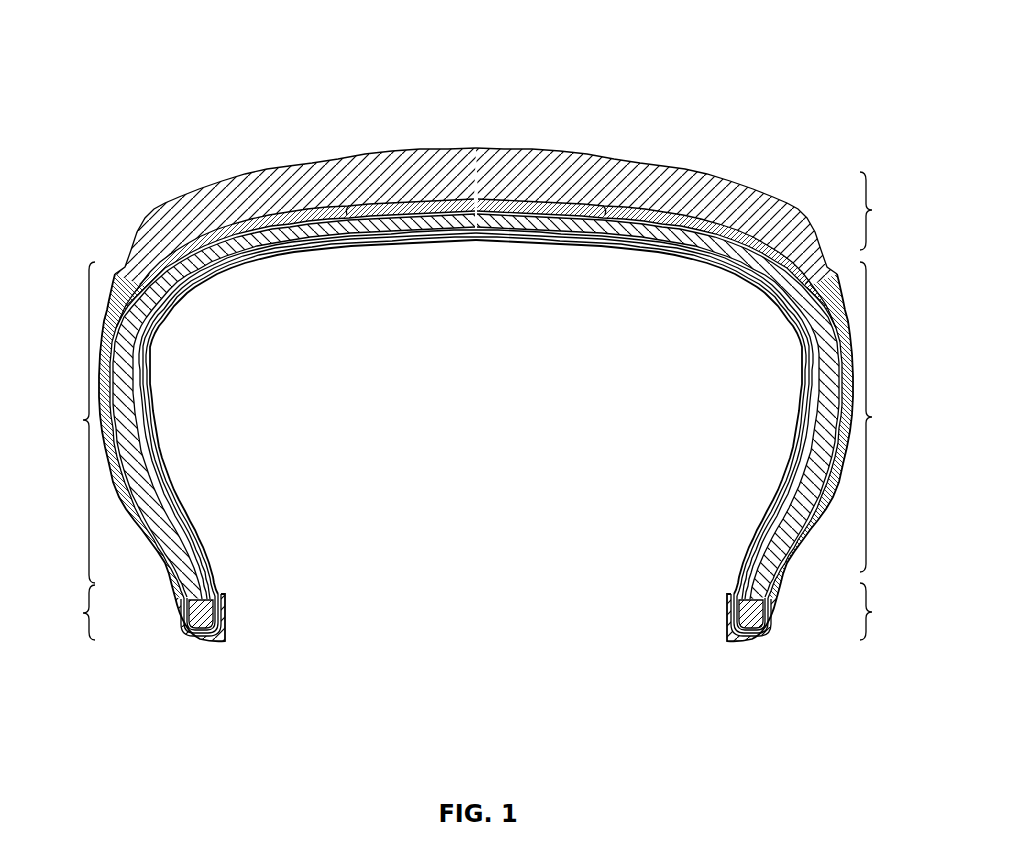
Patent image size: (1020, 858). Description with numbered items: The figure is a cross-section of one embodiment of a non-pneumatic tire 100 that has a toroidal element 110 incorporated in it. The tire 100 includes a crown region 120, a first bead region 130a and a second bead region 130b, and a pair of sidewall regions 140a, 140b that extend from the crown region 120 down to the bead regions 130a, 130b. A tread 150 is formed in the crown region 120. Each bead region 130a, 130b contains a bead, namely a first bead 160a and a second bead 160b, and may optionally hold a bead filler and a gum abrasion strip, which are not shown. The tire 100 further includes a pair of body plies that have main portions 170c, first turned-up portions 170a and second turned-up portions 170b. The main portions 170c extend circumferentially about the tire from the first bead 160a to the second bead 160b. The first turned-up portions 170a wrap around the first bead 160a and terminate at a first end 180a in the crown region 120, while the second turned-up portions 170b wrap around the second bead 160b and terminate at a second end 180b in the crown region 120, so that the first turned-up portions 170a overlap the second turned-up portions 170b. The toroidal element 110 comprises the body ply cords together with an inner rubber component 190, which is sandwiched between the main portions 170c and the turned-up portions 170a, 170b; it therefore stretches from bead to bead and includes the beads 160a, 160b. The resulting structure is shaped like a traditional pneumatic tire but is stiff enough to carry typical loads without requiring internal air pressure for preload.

The non-pneumatic tire 100 is at (474, 352).
The toroidal element 110 is at (814, 266).
The crown region 120 is at (888, 211).
The first bead region 130a is at (895, 611).
The second bead region 130b is at (61, 612).
The sidewall region 140a is at (895, 417).
The sidewall region 140b is at (56, 422).
The tread 150 is at (513, 175).
The first bead 160a is at (750, 617).
The second bead 160b is at (204, 617).
The first turned-up portions 170a is at (632, 216).
The second turned-up portions 170b is at (288, 214).
The main portions 170c is at (247, 254).
The first end 180a is at (349, 218).
The second end 180b is at (608, 212).
The inner rubber component 190 is at (712, 247).